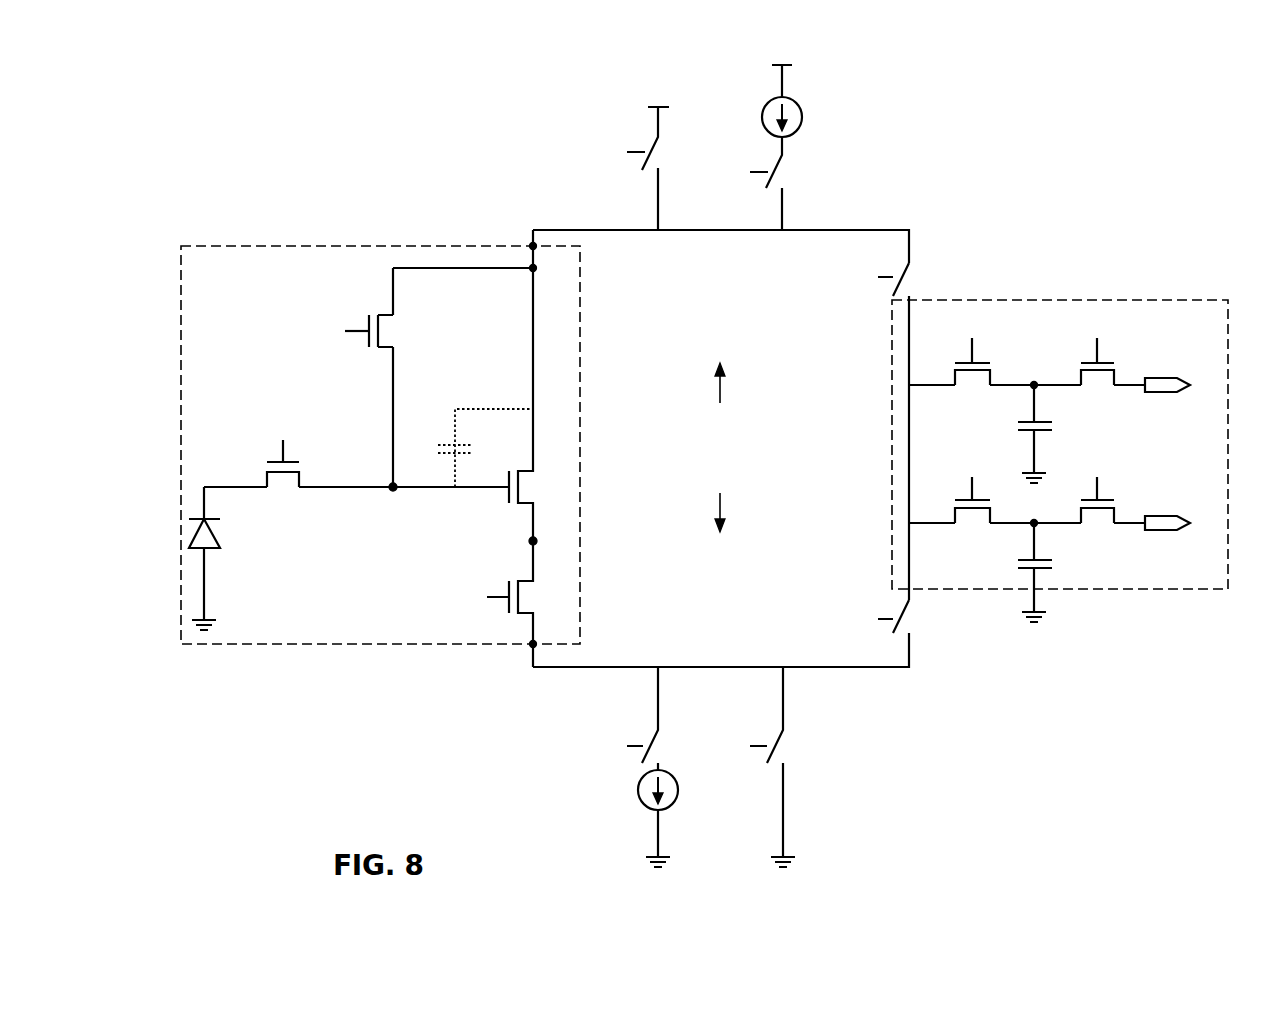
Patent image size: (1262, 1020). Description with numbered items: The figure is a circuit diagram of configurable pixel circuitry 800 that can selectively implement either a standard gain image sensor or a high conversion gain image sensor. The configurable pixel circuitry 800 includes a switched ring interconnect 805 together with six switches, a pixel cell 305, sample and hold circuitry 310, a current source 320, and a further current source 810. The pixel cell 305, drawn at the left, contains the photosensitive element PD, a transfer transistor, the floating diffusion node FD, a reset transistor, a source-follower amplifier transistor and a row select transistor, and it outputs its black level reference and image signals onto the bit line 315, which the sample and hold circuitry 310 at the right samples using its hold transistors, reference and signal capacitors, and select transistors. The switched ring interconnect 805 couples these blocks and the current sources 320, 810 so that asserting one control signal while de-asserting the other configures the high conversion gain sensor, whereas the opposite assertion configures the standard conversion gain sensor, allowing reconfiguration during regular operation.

The configurable pixel circuitry 800 is at (342, 114).
The pixel cell 305 is at (318, 280).
The sample and hold circuitry 310 is at (1102, 300).
The bit line 315 is at (547, 229).
The current source 320 is at (802, 118).
The switched ring interconnect 805 is at (833, 409).
The current source 810 is at (638, 793).